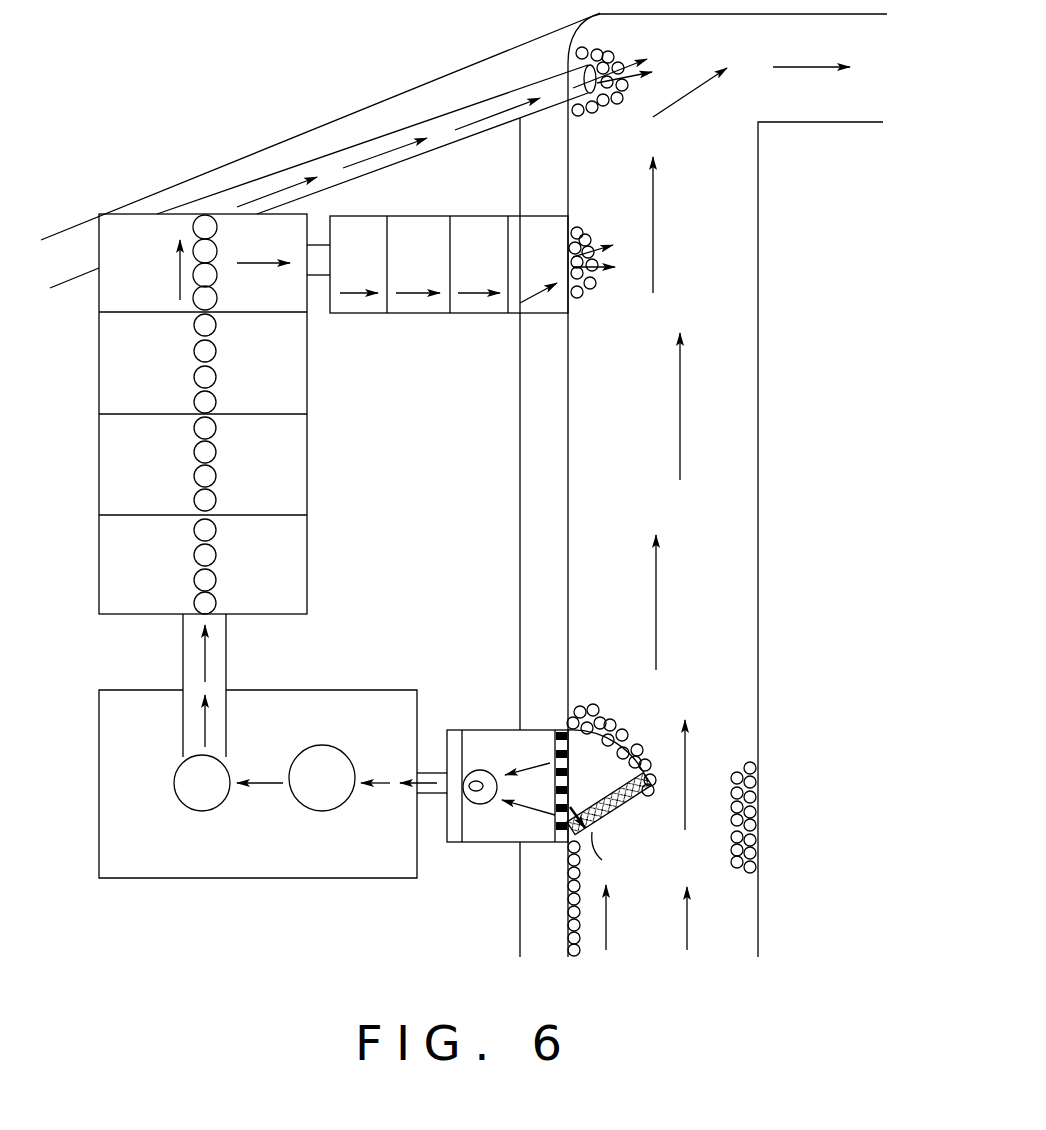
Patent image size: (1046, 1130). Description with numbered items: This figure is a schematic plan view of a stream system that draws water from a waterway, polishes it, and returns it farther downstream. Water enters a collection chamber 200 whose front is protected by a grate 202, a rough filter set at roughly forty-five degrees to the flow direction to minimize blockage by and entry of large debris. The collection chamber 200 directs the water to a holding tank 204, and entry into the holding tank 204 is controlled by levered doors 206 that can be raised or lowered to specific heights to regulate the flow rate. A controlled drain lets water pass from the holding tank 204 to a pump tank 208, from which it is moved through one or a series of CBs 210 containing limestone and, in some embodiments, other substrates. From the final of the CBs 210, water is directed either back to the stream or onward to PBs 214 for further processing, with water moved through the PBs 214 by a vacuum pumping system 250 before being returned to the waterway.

The collection chamber 200 is at (598, 772).
The grate 202 is at (627, 813).
The holding tank 204 is at (495, 826).
The levered doors 206 is at (567, 745).
The pump tank 208 is at (308, 879).
The CBs 210 is at (322, 615).
The PBs 214 is at (510, 208).
The vacuum pumping system 250 is at (552, 299).